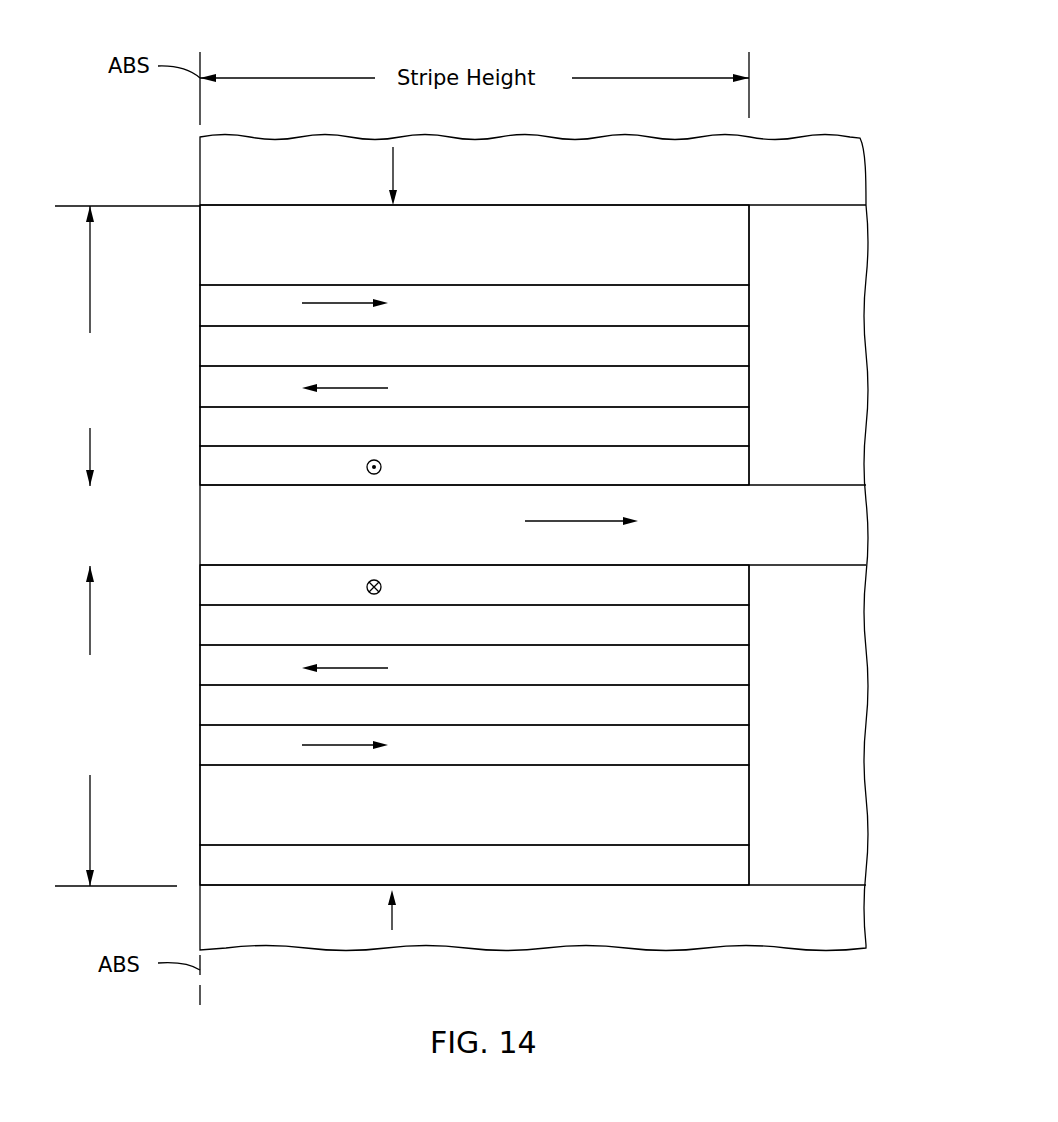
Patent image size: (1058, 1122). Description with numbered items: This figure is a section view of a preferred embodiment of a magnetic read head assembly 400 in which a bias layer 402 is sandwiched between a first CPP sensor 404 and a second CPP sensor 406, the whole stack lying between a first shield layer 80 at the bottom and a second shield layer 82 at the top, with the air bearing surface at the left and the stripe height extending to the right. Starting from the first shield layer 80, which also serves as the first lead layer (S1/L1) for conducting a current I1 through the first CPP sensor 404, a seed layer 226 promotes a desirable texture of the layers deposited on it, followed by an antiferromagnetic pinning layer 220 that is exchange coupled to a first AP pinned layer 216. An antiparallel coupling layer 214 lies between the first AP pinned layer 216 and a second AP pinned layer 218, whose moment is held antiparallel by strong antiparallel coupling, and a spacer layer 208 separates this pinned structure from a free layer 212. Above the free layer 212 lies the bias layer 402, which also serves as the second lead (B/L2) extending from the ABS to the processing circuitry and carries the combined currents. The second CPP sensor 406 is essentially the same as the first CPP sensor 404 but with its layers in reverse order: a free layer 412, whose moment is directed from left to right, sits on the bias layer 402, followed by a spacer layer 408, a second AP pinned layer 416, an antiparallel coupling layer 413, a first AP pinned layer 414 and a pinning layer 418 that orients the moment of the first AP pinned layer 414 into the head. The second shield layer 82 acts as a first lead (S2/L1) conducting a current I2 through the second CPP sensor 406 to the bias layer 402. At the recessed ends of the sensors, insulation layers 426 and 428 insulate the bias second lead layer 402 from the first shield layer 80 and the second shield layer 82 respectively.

The magnetic read head assembly 400 is at (778, 80).
The second shield layer 82 is at (590, 177).
The pinning layer 418 is at (596, 257).
The first AP pinned layer 414 is at (596, 317).
The antiparallel coupling layer 413 is at (596, 358).
The second AP pinned layer 416 is at (596, 398).
The spacer layer 408 is at (596, 438).
The free layer 412 is at (596, 478).
The bias layer 402 is at (591, 555).
The free layer 212 is at (596, 597).
The spacer layer 208 is at (596, 633).
The second AP pinned layer 218 is at (596, 678).
The antiparallel coupling layer 214 is at (596, 718).
The first AP pinned layer 216 is at (596, 757).
The antiferromagnetic pinning layer 220 is at (596, 818).
The seed layer 226 is at (596, 877).
The first shield layer 80 is at (592, 922).
The insulation layer 428 is at (839, 368).
The insulation layer 426 is at (839, 735).
The second CPP sensor 406 is at (123, 346).
The first CPP sensor 404 is at (113, 726).